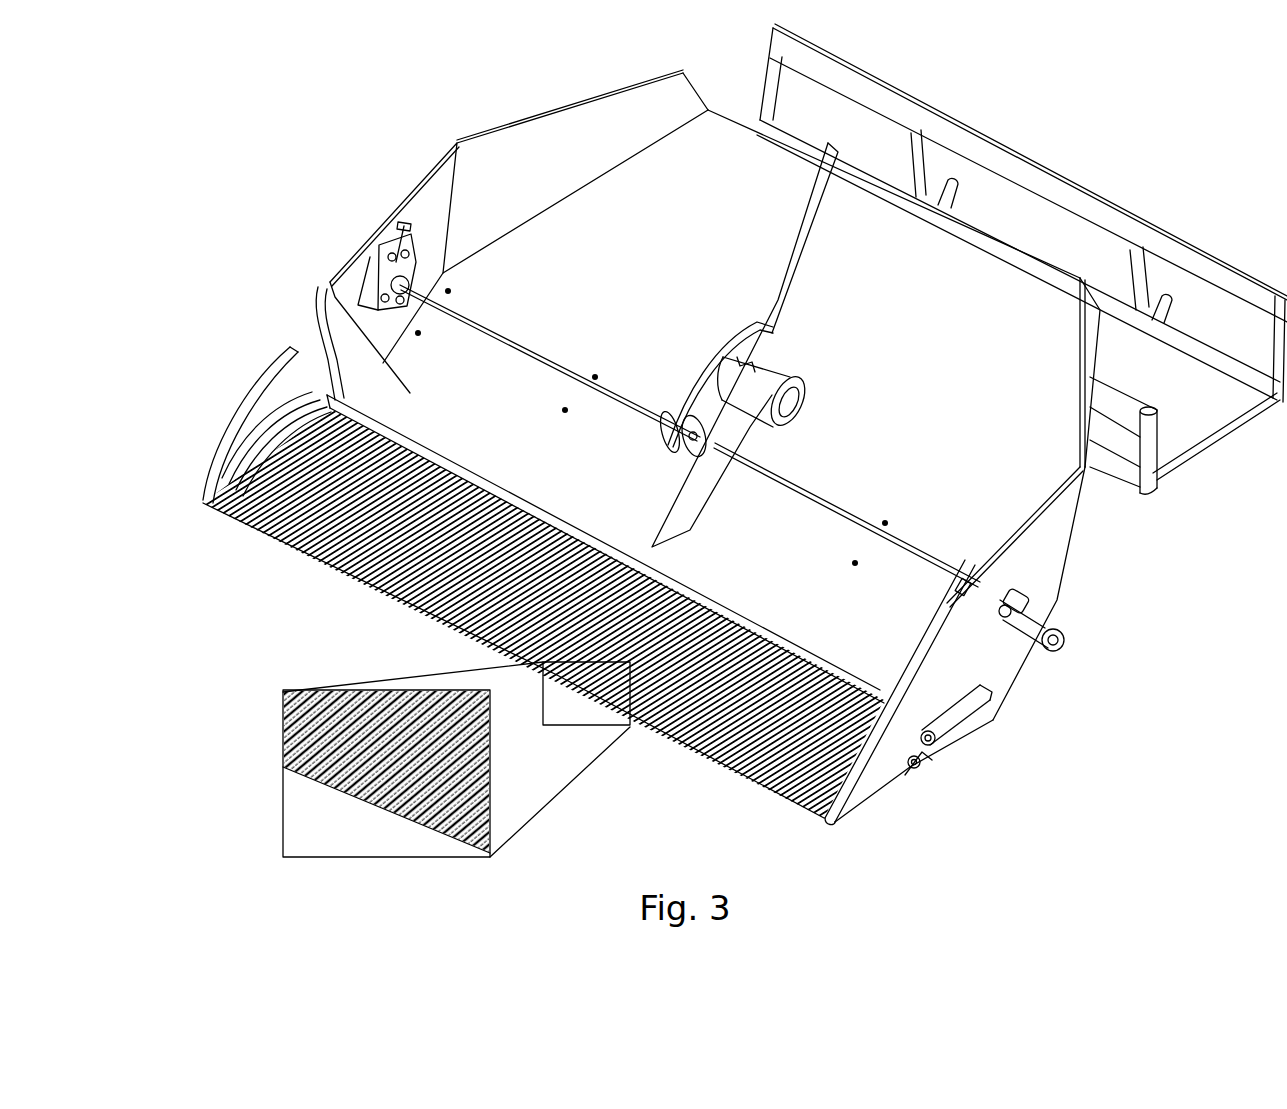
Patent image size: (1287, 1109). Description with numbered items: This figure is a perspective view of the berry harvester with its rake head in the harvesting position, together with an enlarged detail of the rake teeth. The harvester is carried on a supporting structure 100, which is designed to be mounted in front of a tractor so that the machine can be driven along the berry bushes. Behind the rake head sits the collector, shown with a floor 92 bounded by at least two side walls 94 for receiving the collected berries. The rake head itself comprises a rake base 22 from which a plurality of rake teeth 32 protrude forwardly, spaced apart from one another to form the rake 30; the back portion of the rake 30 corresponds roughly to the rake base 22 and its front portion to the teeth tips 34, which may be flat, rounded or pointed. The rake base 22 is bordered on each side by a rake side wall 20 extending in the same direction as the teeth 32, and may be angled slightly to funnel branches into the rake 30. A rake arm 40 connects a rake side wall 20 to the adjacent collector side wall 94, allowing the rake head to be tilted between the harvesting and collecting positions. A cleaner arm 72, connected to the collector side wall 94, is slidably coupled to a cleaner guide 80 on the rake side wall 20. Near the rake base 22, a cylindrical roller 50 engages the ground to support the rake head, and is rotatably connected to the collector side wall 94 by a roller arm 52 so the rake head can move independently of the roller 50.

The rake side wall 20 is at (296, 361).
The rake base 22 is at (255, 528).
The rake 30 is at (410, 733).
The rake teeth 32 is at (320, 747).
The teeth tips 34 is at (377, 803).
The rake arm 40 is at (1000, 640).
The roller 50 is at (903, 767).
The roller arm 52 is at (937, 740).
The cleaner arm 72 is at (333, 345).
The cleaner guide 80 is at (290, 397).
The floor 92 is at (619, 290).
The side walls 94 is at (414, 218).
The supporting structure 100 is at (1200, 475).